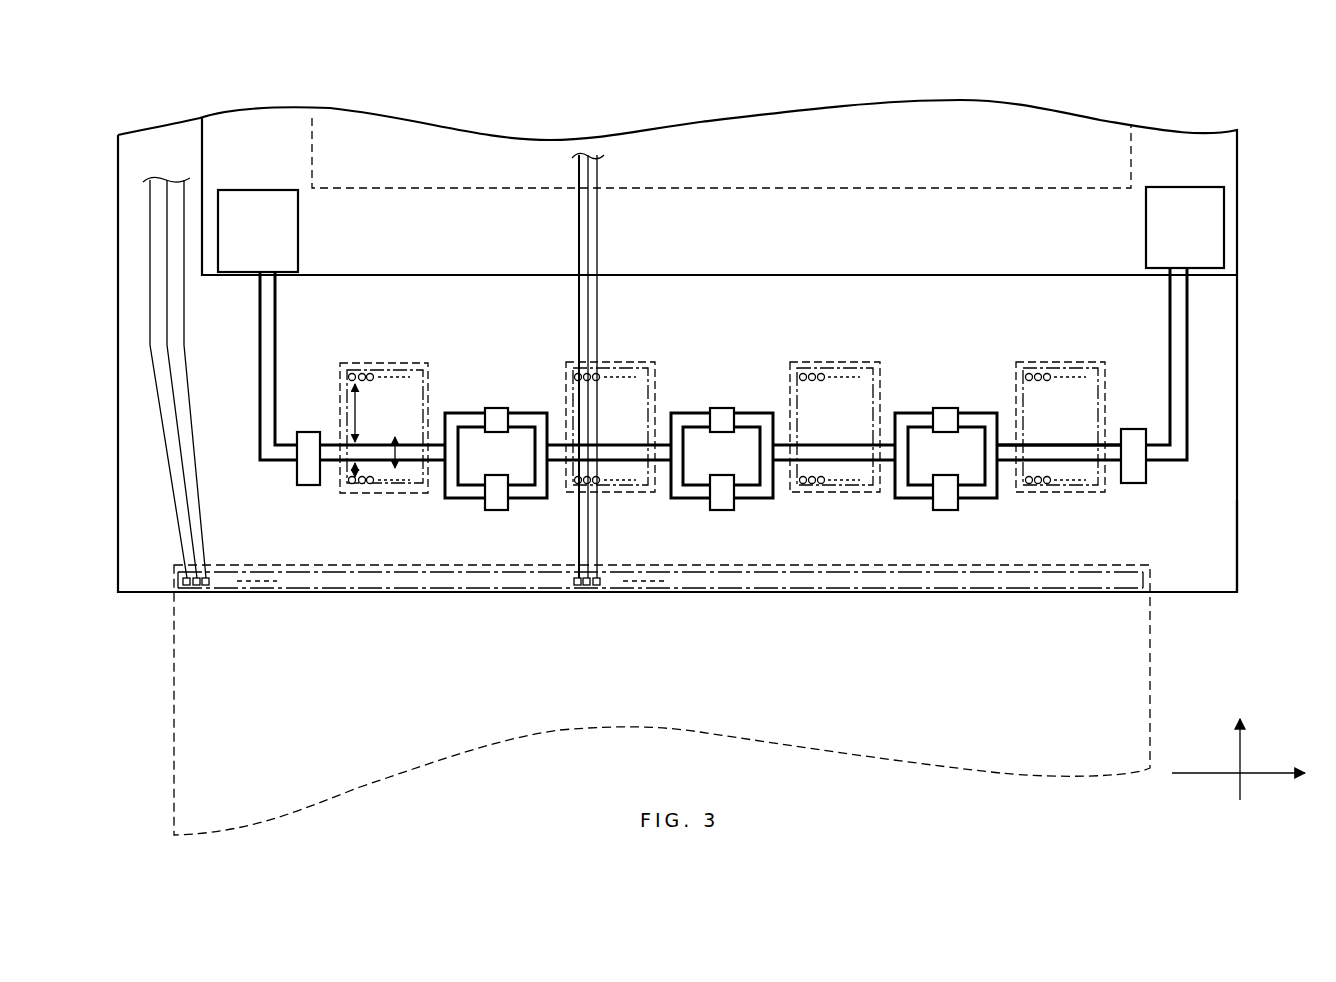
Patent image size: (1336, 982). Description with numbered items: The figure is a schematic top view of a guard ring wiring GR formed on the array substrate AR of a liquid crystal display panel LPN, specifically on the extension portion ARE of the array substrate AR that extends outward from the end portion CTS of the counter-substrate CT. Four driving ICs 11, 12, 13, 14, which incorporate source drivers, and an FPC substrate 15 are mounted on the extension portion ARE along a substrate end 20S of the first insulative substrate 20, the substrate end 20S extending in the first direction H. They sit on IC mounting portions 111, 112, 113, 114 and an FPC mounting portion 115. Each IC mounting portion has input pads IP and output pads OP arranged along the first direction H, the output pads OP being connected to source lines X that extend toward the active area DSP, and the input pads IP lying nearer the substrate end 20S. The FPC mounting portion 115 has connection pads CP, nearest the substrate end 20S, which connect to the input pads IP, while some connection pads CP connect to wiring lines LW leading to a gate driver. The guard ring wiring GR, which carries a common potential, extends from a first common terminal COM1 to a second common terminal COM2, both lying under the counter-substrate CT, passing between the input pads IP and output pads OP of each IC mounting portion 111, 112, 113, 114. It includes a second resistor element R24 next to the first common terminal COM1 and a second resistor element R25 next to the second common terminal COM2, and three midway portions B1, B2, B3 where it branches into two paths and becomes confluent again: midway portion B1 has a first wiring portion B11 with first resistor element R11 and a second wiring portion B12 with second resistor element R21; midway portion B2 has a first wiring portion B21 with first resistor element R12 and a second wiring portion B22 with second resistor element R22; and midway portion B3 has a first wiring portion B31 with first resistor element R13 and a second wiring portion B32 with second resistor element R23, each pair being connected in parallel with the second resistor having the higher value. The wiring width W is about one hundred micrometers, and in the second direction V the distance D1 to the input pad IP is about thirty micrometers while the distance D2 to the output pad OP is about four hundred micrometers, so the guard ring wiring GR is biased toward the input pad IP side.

The liquid crystal display panel LPN is at (1246, 141).
The counter-substrate CT is at (1239, 172).
The end portion of the counter-substrate CTS is at (940, 279).
The active area DSP is at (1068, 140).
The extension portion ARE is at (1211, 531).
The array substrate AR is at (1240, 561).
The first insulative substrate 20 is at (1201, 582).
The first common terminal COM1 is at (258, 200).
The second common terminal COM2 is at (1185, 200).
The second resistor element R24 is at (302, 487).
The second resistor element R25 is at (1133, 485).
The guard ring wiring GR is at (1115, 441).
The midway portion B1 is at (498, 453).
The first wiring portion B11 is at (470, 425).
The second wiring portion B12 is at (533, 497).
The first resistor element R11 is at (495, 408).
The second resistor element R21 is at (497, 512).
The midway portion B2 is at (728, 453).
The first wiring portion B21 is at (697, 425).
The second wiring portion B22 is at (758, 497).
The first resistor element R12 is at (722, 408).
The second resistor element R22 is at (722, 512).
The midway portion B3 is at (952, 453).
The first wiring portion B31 is at (920, 425).
The second wiring portion B32 is at (983, 497).
The first resistor element R13 is at (947, 408).
The second resistor element R23 is at (947, 512).
The driving IC 11 is at (398, 395).
The IC mounting portion 111 is at (418, 362).
The driving IC 12 is at (625, 393).
The IC mounting portion 112 is at (648, 362).
The driving IC 13 is at (848, 393).
The IC mounting portion 113 is at (870, 362).
The driving IC 14 is at (1073, 393).
The IC mounting portion 114 is at (1095, 362).
The output pads OP is at (370, 373).
The input pads IP is at (370, 484).
The source lines X is at (599, 230).
The wiring lines LW is at (162, 434).
The connection pads CP is at (206, 587).
The FPC mounting portion 115 is at (942, 590).
The substrate end 20S is at (1032, 596).
The FPC substrate 15 is at (1152, 690).
The distance D1 is at (350, 470).
The distance D2 is at (350, 406).
The wiring width W is at (395, 445).
The second direction V is at (1238, 747).
The first direction H is at (1249, 773).